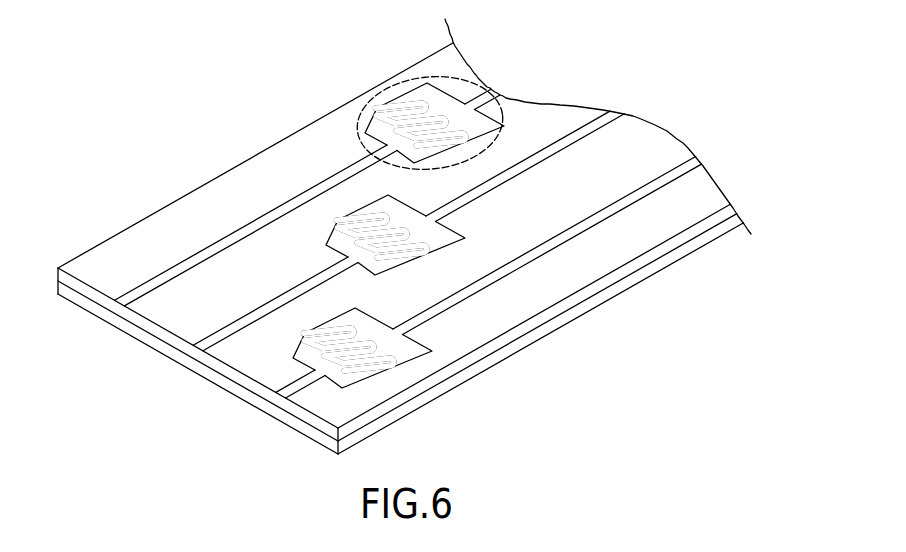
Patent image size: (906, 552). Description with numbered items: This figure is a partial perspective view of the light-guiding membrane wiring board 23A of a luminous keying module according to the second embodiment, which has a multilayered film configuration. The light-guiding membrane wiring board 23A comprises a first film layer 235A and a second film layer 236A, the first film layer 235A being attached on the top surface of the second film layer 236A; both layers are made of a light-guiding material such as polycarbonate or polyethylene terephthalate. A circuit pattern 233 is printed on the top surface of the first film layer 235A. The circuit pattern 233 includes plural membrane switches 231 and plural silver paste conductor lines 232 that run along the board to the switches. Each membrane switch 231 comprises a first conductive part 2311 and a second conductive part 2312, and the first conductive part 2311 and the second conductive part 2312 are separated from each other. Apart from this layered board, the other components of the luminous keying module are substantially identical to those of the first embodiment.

The light-guiding membrane wiring board 23A is at (150, 353).
The membrane switch 231 is at (400, 83).
The first conductive part 2311 is at (372, 128).
The second conductive part 2312 is at (438, 102).
The silver paste conductor line 232 is at (238, 223).
The circuit pattern 233 is at (255, 364).
The first film layer 235A is at (514, 333).
The second film layer 236A is at (462, 376).